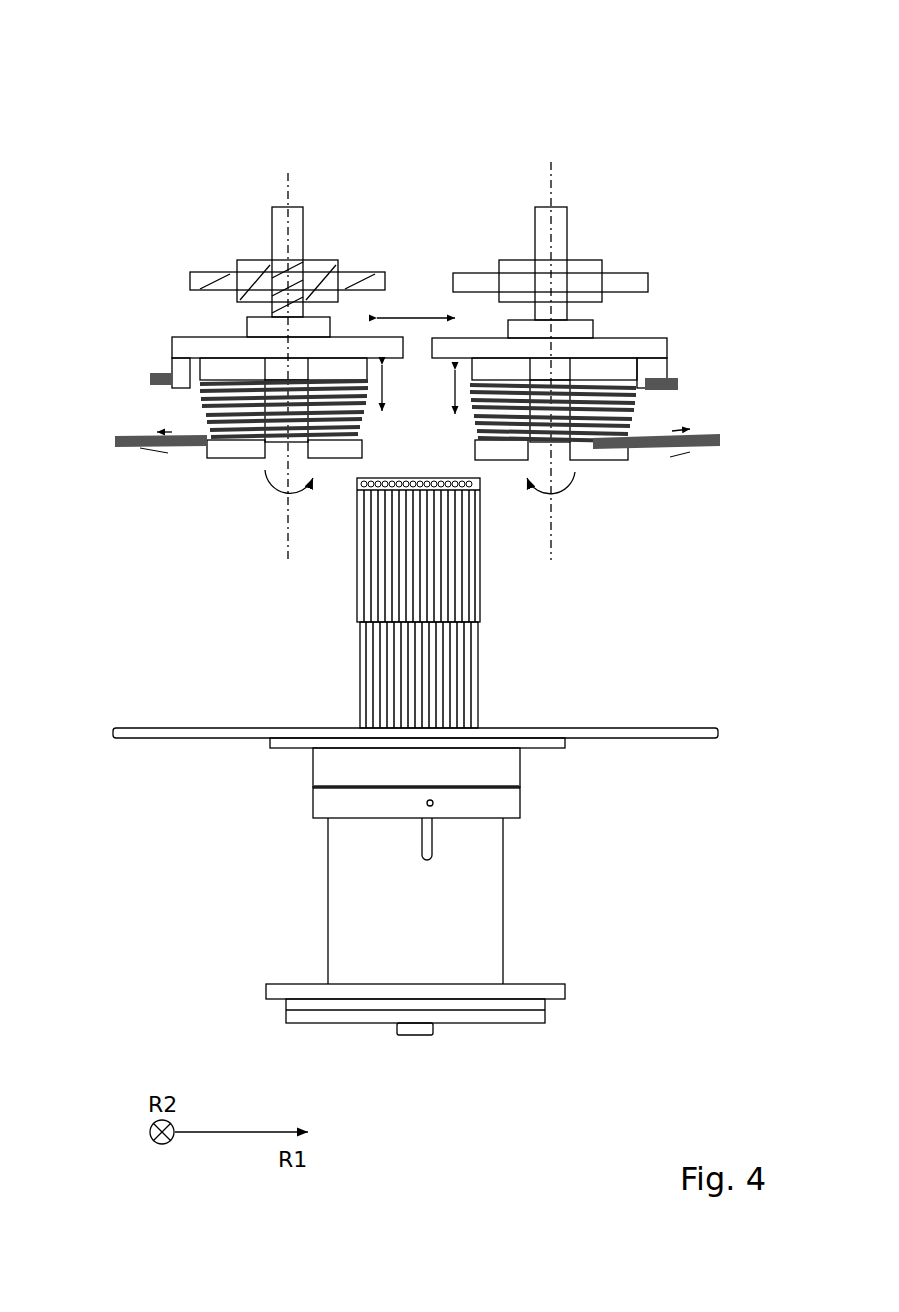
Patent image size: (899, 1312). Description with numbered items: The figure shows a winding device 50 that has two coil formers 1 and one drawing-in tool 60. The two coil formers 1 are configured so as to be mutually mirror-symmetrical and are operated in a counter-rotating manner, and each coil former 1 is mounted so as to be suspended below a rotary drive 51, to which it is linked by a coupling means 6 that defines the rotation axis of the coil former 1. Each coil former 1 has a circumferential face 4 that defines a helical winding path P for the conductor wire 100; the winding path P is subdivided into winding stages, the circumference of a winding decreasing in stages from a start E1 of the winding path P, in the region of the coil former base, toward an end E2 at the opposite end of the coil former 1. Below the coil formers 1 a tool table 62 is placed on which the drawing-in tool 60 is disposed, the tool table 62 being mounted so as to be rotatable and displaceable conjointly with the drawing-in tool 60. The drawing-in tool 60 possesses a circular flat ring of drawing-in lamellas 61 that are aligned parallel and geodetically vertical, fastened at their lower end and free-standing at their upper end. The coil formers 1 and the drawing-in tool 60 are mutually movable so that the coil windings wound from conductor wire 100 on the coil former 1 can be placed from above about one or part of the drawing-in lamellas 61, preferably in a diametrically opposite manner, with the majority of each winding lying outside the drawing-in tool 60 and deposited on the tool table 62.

The winding device 50 is at (94, 106).
The coil former 1 is at (218, 210).
The rotary drive 51 is at (237, 262).
The coupling means 6 is at (264, 309).
The circumferential face 4 is at (200, 450).
The conductor wire 100 is at (130, 447).
The drawing-in lamellas 61 is at (392, 607).
The drawing-in tool 60 is at (364, 662).
The tool table 62 is at (188, 743).
The start of the helical winding path E1 is at (200, 380).
The end of the helical winding path E2 is at (416, 434).
The helical winding path P is at (240, 430).